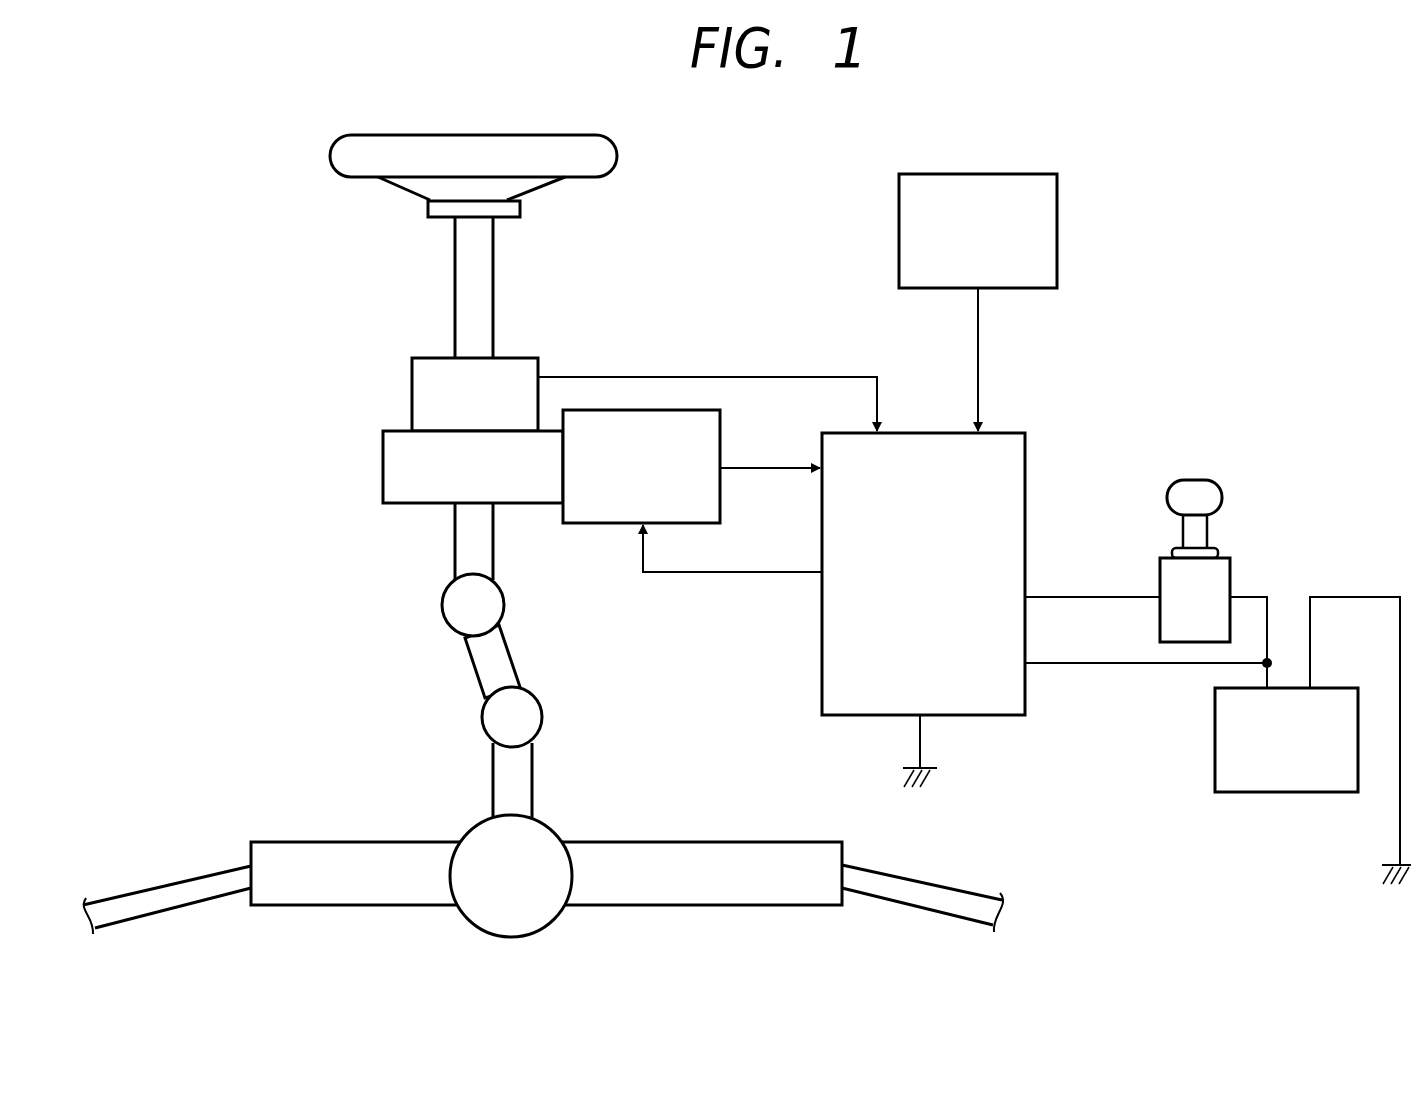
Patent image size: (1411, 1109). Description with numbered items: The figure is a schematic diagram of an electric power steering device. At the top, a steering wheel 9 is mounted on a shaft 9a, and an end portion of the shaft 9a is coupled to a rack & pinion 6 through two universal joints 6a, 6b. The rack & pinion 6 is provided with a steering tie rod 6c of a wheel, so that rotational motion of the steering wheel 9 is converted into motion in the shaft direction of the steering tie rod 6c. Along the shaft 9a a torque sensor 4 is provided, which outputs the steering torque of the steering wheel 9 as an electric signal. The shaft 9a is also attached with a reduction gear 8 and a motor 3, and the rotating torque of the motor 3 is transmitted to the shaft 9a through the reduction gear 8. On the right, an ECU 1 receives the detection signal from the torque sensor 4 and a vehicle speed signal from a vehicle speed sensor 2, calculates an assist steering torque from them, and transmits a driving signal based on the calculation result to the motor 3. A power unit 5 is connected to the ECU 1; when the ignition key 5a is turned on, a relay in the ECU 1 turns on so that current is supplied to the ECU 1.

The ECU 1 is at (1012, 432).
The vehicle speed sensor 2 is at (1057, 232).
The motor 3 is at (593, 523).
The torque sensor 4 is at (412, 385).
The power unit 5 is at (1283, 792).
The ignition key 5a is at (1222, 497).
The rack & pinion 6 is at (553, 822).
The universal joint 6a is at (443, 603).
The universal joint 6b is at (482, 712).
The steering tie rod 6c is at (935, 893).
The reduction gear 8 is at (383, 462).
The steering wheel 9 is at (617, 152).
The shaft 9a is at (453, 288).